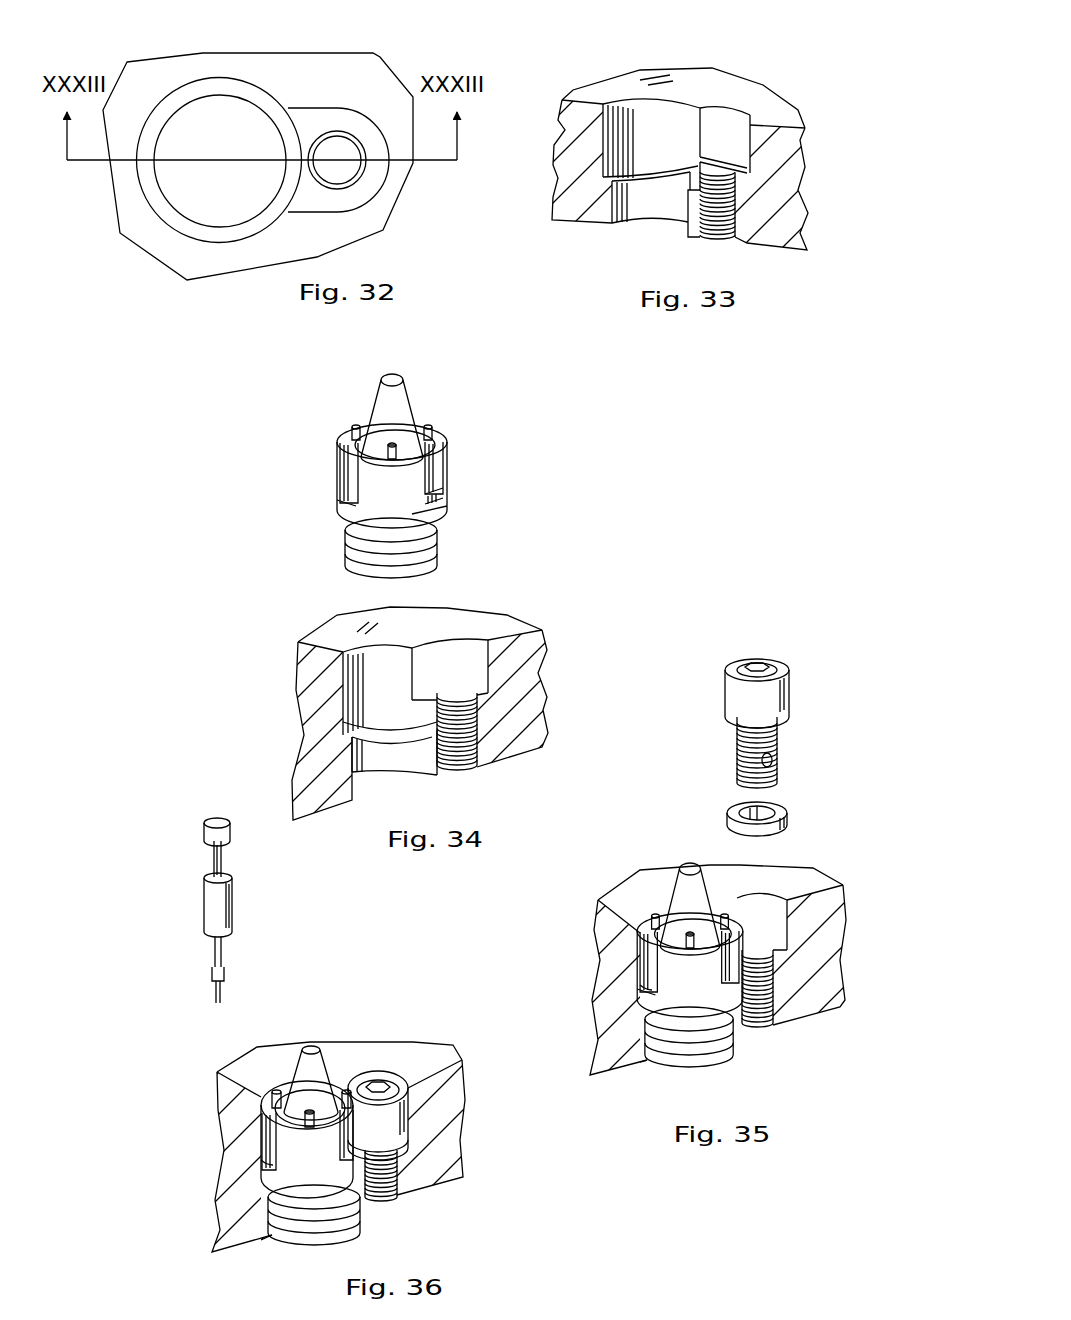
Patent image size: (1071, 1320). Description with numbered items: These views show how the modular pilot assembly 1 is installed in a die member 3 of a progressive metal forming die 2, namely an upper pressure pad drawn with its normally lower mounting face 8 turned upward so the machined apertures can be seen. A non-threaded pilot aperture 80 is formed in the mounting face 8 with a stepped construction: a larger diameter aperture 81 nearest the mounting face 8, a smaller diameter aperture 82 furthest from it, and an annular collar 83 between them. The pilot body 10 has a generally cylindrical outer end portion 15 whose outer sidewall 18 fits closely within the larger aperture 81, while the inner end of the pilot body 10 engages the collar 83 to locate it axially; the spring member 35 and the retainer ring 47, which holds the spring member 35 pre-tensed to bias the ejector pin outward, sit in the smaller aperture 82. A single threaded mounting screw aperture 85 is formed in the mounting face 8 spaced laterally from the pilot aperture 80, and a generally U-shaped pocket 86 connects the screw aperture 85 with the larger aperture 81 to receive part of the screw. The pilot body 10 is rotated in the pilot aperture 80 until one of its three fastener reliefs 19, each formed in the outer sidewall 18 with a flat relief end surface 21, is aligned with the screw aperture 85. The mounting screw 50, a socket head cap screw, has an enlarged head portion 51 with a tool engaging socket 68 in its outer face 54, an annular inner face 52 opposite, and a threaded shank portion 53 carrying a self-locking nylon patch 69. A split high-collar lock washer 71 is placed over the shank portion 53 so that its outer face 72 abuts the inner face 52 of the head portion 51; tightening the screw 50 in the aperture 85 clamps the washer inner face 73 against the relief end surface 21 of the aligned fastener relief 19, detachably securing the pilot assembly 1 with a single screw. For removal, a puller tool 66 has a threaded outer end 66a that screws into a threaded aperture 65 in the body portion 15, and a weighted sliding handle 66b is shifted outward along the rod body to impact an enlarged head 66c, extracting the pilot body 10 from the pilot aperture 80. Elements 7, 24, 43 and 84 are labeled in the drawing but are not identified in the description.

In FIG. 34, the modular pilot assembly 1 is at (391, 465).
In FIG. 35, the modular pilot assembly 1 is at (720, 951).
In FIG. 36, the modular pilot assembly 1 is at (283, 1124).
In FIG. 32, the multi-station progressive metal forming die 2 is at (258, 140).
In FIG. 35, the multi-station progressive metal forming die 2 is at (714, 958).
In FIG. 36, the multi-station progressive metal forming die 2 is at (331, 1137).
In FIG. 33, the die member 3 is at (674, 134).
In FIG. 34, the die member 3 is at (412, 694).
In FIG. 35, the die member 3 is at (714, 973).
In FIG. 36, the die member 3 is at (342, 1137).
In FIG. 34, the bottom surface 7 is at (525, 755).
In FIG. 35, the bottom surface 7 is at (822, 1010).
In FIG. 36, the bottom surface 7 is at (440, 1185).
In FIG. 32, the lower mounting face 8 is at (281, 78).
In FIG. 34, the lower mounting face 8 is at (513, 623).
In FIG. 35, the lower mounting face 8 is at (612, 897).
In FIG. 36, the lower mounting face 8 is at (418, 1047).
In FIG. 34, the pilot body 10 is at (452, 445).
In FIG. 35, the pilot body 10 is at (735, 905).
In FIG. 36, the pilot body 10 is at (262, 1182).
In FIG. 34, the outer end portion 15 is at (448, 516).
In FIG. 34, the outer sidewall 18 is at (345, 507).
In FIG. 35, the outer sidewall 18 is at (650, 1005).
In FIG. 34, the fastener relief 19 is at (348, 472).
In FIG. 35, the fastener relief 19 is at (647, 962).
In FIG. 36, the fastener relief 19 is at (265, 1137).
In FIG. 34, the relief end surface 21 is at (444, 497).
In FIG. 34, the nozzle tip 24 is at (403, 382).
In FIG. 35, the nozzle tip 24 is at (684, 864).
In FIG. 36, the nozzle tip 24 is at (310, 1045).
In FIG. 34, the spring member 35 is at (360, 550).
In FIG. 35, the spring member 35 is at (667, 1050).
In FIG. 36, the spring member 35 is at (350, 1215).
In FIG. 34, the pin 43 is at (432, 430).
In FIG. 35, the pin 43 is at (740, 926).
In FIG. 36, the pin 43 is at (268, 1096).
In FIG. 34, the retainer ring 47 is at (425, 558).
In FIG. 35, the retainer ring 47 is at (712, 1058).
In FIG. 36, the retainer ring 47 is at (303, 1238).
In FIG. 35, the mounting screw 50 is at (761, 698).
In FIG. 36, the mounting screw 50 is at (432, 1115).
In FIG. 35, the head portion 51 is at (760, 668).
In FIG. 35, the inner face 52 is at (787, 717).
In FIG. 36, the inner face 52 is at (411, 1113).
In FIG. 35, the threaded shank portion 53 is at (756, 752).
In FIG. 36, the threaded shank portion 53 is at (390, 1196).
In FIG. 35, the outer face 54 is at (754, 663).
In FIG. 34, the threaded aperture 65 is at (354, 428).
In FIG. 35, the threaded aperture 65 is at (657, 910).
In FIG. 36, the threaded aperture 65 is at (276, 1090).
In FIG. 36, the puller tool 66 is at (227, 893).
In FIG. 36, the threaded outer end 66a is at (214, 1000).
In FIG. 36, the weighted sliding handle 66b is at (234, 915).
In FIG. 36, the enlarged head 66c is at (232, 836).
In FIG. 35, the tool engaging socket 68 is at (760, 667).
In FIG. 36, the tool engaging socket 68 is at (380, 1082).
In FIG. 35, the self-locking nylon patch 69 is at (773, 760).
In FIG. 35, the lock washer 71 is at (761, 808).
In FIG. 36, the lock washer 71 is at (411, 1144).
In FIG. 35, the outer face 72 is at (780, 826).
In FIG. 35, the inner face 73 is at (740, 807).
In FIG. 32, the pilot aperture 80 is at (204, 200).
In FIG. 33, the pilot aperture 80 is at (650, 105).
In FIG. 34, the pilot aperture 80 is at (377, 690).
In FIG. 32, the larger diameter aperture 81 is at (240, 242).
In FIG. 33, the larger diameter aperture 81 is at (645, 147).
In FIG. 34, the larger diameter aperture 81 is at (368, 705).
In FIG. 35, the larger diameter aperture 81 is at (637, 985).
In FIG. 36, the larger diameter aperture 81 is at (261, 1160).
In FIG. 32, the smaller diameter aperture 82 is at (207, 200).
In FIG. 33, the smaller diameter aperture 82 is at (650, 198).
In FIG. 34, the smaller diameter aperture 82 is at (390, 750).
In FIG. 35, the smaller diameter aperture 82 is at (640, 1068).
In FIG. 36, the smaller diameter aperture 82 is at (270, 1235).
In FIG. 32, the annular collar 83 is at (184, 197).
In FIG. 33, the annular collar 83 is at (688, 165).
In FIG. 34, the annular collar 83 is at (414, 718).
In FIG. 32, the lobe 84 is at (368, 115).
In FIG. 32, the threaded mounting screw aperture 85 is at (355, 172).
In FIG. 33, the threaded mounting screw aperture 85 is at (711, 200).
In FIG. 34, the threaded mounting screw aperture 85 is at (455, 765).
In FIG. 35, the threaded mounting screw aperture 85 is at (760, 1022).
In FIG. 33, the pocket 86 is at (727, 135).
In FIG. 34, the pocket 86 is at (456, 655).
In FIG. 35, the pocket 86 is at (757, 912).